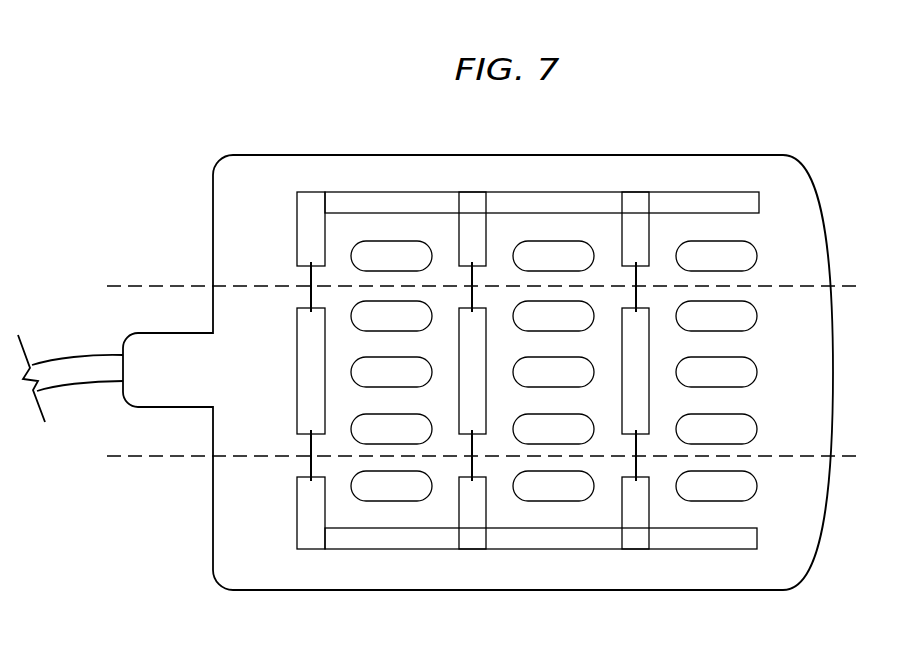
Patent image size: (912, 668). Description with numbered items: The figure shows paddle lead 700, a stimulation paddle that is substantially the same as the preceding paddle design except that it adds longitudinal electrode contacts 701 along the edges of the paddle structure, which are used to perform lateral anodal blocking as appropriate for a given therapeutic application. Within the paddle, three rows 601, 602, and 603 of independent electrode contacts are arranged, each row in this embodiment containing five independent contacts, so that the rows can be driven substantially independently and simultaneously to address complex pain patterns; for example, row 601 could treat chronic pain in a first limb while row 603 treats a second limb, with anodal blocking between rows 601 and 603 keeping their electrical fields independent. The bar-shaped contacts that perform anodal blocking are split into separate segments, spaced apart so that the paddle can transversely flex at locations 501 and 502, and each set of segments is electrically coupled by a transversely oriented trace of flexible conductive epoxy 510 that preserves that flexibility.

The paddle lead 700 is at (283, 88).
The longitudinal electrode contacts 701 is at (518, 192).
The row of independent electrode contacts 601 is at (720, 233).
The row of independent electrode contacts 602 is at (567, 233).
The row of independent electrode contacts 603 is at (390, 234).
The trace of flexible conductive epoxy 510 is at (466, 272).
The flex location 501 is at (153, 283).
The flex location 502 is at (173, 458).